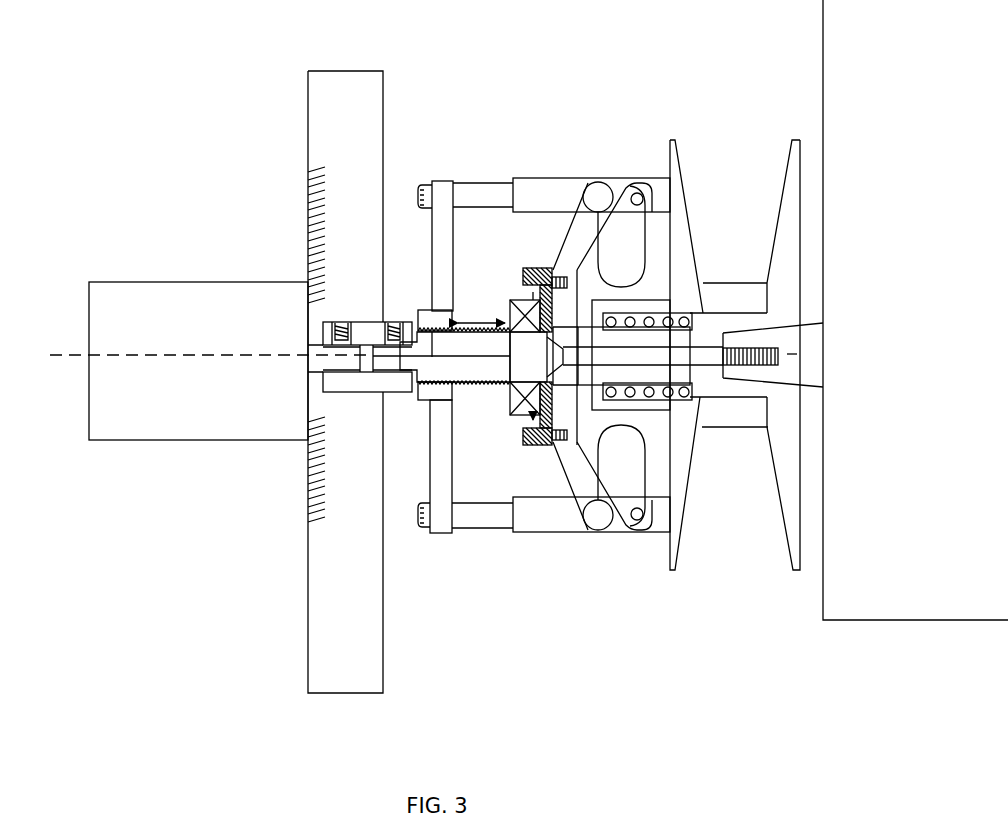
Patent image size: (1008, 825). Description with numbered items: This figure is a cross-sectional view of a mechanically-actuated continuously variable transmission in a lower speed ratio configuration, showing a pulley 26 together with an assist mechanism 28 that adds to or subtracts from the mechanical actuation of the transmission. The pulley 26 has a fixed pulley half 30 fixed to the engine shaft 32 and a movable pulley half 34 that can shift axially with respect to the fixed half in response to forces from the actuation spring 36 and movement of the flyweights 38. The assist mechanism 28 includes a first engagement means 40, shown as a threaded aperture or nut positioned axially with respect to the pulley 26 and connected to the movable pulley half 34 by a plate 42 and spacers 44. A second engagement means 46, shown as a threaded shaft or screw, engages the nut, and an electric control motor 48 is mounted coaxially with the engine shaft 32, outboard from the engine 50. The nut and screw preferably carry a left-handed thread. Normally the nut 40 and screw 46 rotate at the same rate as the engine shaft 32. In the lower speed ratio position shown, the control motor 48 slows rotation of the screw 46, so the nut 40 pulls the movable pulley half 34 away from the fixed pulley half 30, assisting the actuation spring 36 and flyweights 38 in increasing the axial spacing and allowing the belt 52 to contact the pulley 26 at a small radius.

The pulley 26 is at (726, 384).
The assist mechanism 28 is at (463, 131).
The fixed pulley half 30 is at (790, 535).
The engine shaft 32 is at (813, 377).
The movable pulley half 34 is at (672, 545).
The actuation spring 36 is at (667, 320).
The flyweights 38 is at (623, 233).
The first engagement means 40 is at (425, 394).
The plate 42 is at (438, 468).
The spacers 44 is at (498, 522).
The second engagement means 46 is at (438, 365).
The electric control motor 48 is at (168, 402).
The engine 50 is at (847, 365).
The belt 52 is at (747, 418).